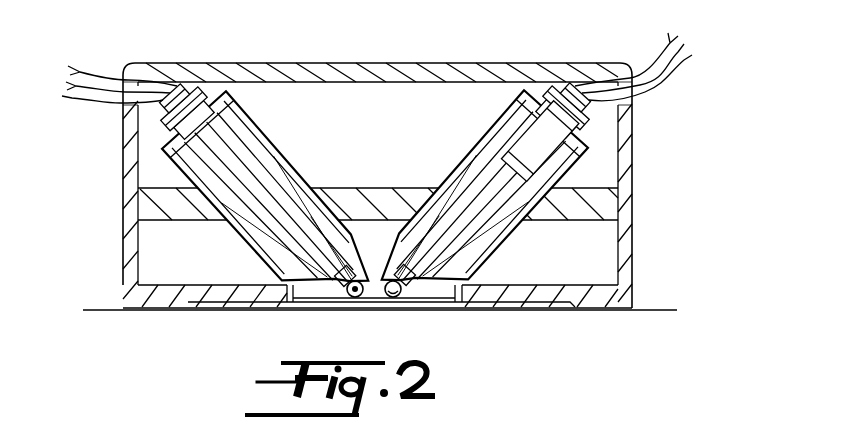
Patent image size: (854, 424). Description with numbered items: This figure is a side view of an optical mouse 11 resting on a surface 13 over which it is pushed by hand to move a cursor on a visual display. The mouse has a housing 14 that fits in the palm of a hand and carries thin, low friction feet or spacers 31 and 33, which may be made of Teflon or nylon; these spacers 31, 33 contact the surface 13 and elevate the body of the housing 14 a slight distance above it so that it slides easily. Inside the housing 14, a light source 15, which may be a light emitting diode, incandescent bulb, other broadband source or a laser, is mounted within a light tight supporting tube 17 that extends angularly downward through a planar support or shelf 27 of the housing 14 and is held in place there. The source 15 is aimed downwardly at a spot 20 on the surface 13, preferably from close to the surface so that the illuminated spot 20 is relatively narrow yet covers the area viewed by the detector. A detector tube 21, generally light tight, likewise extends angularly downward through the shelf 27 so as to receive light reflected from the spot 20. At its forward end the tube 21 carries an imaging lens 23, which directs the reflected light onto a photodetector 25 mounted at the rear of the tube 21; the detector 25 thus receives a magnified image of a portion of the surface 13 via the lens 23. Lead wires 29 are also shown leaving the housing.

The optical mouse 11 is at (473, 43).
The surface 13 is at (663, 310).
The housing 14 is at (632, 123).
The light source 15 is at (353, 305).
The supporting tube 17 is at (278, 152).
The spot 20 is at (377, 305).
The detector tube 21 is at (455, 175).
The imaging lens 23 is at (397, 307).
The photodetector 25 is at (503, 128).
The planar support 27 is at (595, 190).
The lead wires 29 is at (676, 62).
The spacer 31 is at (623, 300).
The spacer 33 is at (130, 298).